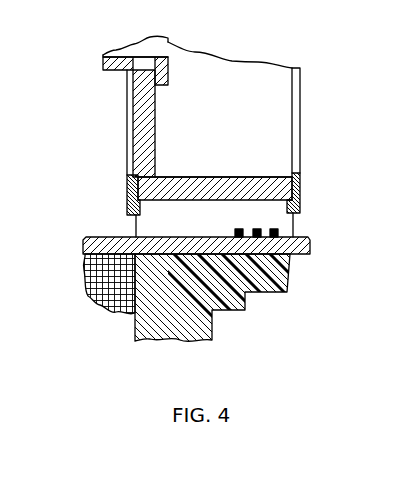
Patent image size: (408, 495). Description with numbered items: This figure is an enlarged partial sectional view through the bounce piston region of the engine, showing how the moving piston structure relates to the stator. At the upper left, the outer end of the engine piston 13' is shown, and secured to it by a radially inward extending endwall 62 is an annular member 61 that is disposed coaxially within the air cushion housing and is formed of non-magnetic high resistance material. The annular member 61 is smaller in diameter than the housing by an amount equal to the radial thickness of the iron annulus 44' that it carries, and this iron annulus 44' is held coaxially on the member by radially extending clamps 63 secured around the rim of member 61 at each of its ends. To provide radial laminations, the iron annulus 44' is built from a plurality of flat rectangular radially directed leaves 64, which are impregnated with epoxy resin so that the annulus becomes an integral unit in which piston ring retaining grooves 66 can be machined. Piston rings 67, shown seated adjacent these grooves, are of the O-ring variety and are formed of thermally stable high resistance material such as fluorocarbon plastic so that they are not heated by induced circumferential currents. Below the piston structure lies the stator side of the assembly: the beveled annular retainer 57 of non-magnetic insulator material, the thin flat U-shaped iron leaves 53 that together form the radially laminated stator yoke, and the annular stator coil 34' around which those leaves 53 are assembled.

The engine piston 13' is at (178, 65).
The endwall 62 is at (155, 98).
The annular member 61 is at (258, 180).
The clamps 63 is at (127, 192).
The iron annulus 44' is at (176, 223).
The leaves 64 is at (188, 226).
The piston rings 67 is at (256, 229).
The piston ring retaining grooves 66 is at (274, 230).
The annular retainer 57 is at (277, 290).
The iron leaves 53 is at (210, 340).
The stator coil 34' is at (97, 285).